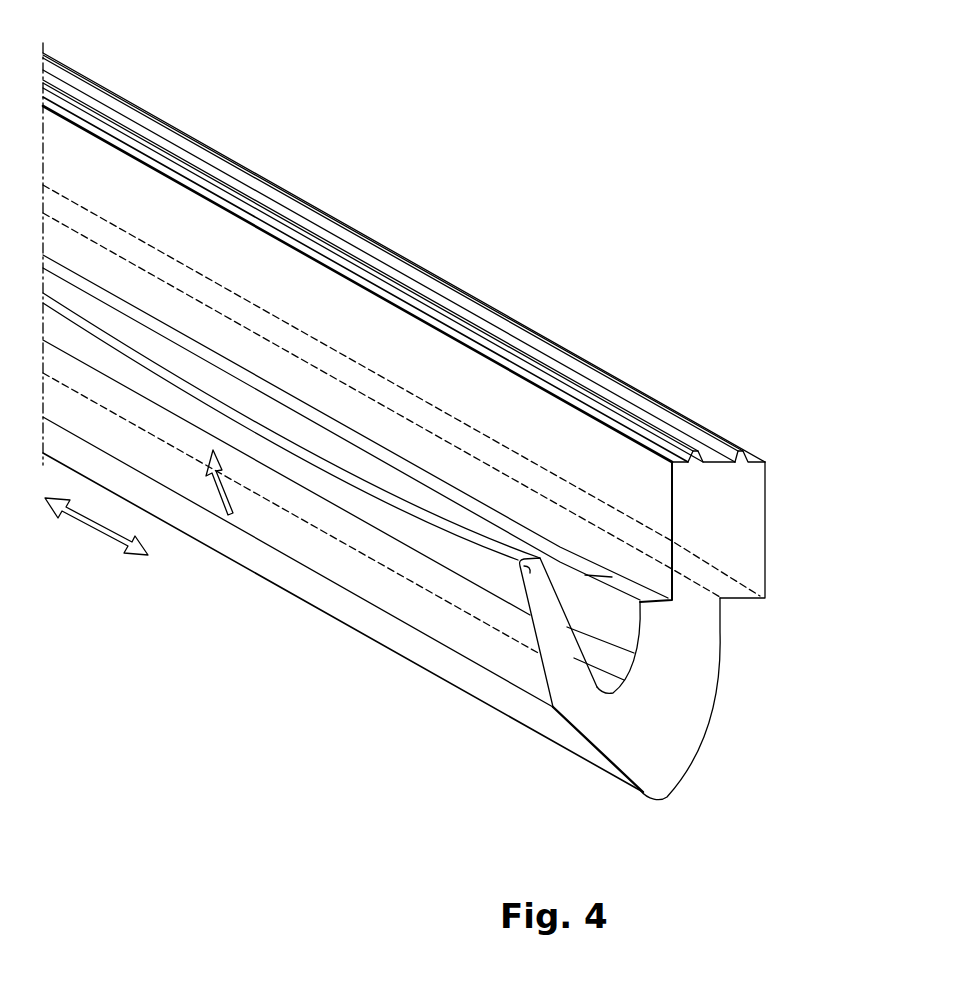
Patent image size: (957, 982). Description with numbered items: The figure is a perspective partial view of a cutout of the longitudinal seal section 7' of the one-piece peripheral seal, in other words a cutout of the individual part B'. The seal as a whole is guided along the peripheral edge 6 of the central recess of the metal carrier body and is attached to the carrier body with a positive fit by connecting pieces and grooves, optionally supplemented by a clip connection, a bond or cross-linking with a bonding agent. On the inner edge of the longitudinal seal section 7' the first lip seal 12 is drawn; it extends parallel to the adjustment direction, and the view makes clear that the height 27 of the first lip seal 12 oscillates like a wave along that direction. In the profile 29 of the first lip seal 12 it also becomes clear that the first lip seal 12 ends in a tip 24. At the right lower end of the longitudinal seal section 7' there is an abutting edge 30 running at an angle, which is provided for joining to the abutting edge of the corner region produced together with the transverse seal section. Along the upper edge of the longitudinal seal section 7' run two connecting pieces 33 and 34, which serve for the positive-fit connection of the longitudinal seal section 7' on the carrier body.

The individual part B' is at (90, 98).
The longitudinal seal section 7' is at (404, 327).
The peripheral edge 6 is at (92, 531).
The first lip seal 12 is at (408, 558).
The tip 24 is at (521, 582).
The height 27 is at (222, 498).
The profile 29 is at (548, 615).
The abutting edge 30 is at (683, 703).
The connecting piece 33 is at (723, 438).
The connecting piece 34 is at (652, 424).